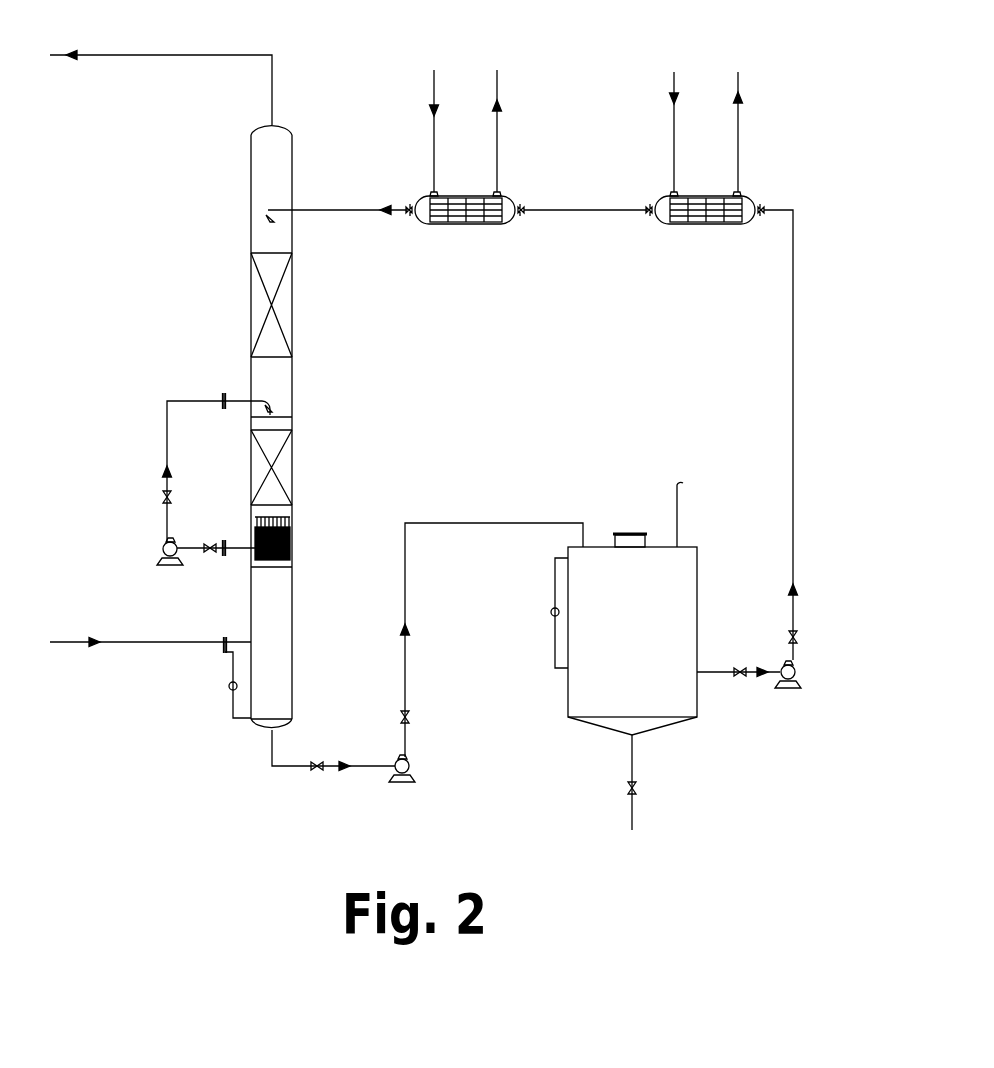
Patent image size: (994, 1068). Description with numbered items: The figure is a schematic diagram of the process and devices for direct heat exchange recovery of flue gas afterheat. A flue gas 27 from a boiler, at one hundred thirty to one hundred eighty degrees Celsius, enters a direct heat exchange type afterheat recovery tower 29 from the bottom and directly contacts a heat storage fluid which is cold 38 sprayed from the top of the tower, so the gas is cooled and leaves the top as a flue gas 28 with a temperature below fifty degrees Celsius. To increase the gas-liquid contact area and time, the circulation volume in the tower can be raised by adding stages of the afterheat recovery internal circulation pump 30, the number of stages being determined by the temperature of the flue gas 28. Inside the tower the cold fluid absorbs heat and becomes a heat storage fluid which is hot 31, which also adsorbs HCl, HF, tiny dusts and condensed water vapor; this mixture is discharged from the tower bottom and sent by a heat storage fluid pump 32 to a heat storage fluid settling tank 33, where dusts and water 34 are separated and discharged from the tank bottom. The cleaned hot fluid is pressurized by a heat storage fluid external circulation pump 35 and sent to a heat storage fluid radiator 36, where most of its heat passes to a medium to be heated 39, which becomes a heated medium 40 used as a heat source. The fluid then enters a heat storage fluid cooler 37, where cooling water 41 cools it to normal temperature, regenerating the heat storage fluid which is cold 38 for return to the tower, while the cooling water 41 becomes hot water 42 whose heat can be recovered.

The flue gas from a boiler 27 is at (150, 648).
The flue gas after afterheat recovery 28 is at (161, 62).
The direct heat exchange type afterheat recovery tower 29 is at (287, 470).
The afterheat recovery internal circulation pump 30 is at (162, 540).
The heat storage fluid which is hot 31 is at (333, 735).
The heat storage fluid pump 32 is at (410, 757).
The heat storage fluid settling tank 33 is at (610, 555).
The dusts and water 34 is at (664, 782).
The heat storage fluid external circulation pump 35 is at (785, 662).
The heat storage fluid radiator 36 is at (718, 225).
The heat storage fluid cooler 37 is at (481, 224).
The heat storage fluid which is cold 38 is at (339, 186).
The medium to be heated 39 is at (675, 104).
The heated medium 40 is at (736, 104).
The cooling water 41 is at (431, 105).
The hot water 42 is at (499, 105).